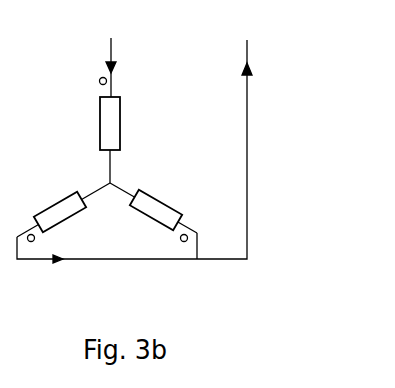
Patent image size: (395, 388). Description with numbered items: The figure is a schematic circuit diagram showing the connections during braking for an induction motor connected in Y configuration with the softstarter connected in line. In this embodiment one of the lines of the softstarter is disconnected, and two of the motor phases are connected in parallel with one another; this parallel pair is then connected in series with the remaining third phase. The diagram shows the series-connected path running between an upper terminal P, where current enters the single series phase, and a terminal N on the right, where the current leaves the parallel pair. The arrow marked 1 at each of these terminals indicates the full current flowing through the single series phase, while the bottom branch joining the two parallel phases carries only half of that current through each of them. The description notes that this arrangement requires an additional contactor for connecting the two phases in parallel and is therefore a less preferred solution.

The positive terminal P is at (110, 54).
The neutral/negative terminal N is at (246, 44).
The current magnitude through phase a and neutral 1 is at (180, 68).